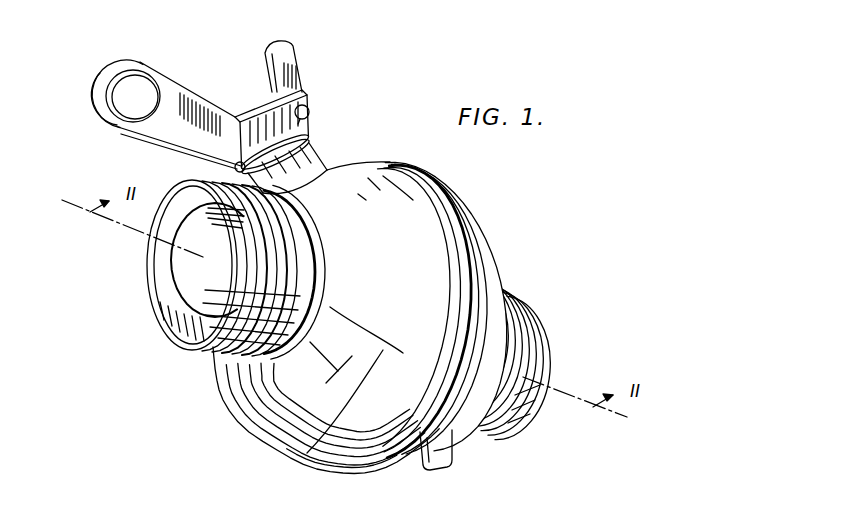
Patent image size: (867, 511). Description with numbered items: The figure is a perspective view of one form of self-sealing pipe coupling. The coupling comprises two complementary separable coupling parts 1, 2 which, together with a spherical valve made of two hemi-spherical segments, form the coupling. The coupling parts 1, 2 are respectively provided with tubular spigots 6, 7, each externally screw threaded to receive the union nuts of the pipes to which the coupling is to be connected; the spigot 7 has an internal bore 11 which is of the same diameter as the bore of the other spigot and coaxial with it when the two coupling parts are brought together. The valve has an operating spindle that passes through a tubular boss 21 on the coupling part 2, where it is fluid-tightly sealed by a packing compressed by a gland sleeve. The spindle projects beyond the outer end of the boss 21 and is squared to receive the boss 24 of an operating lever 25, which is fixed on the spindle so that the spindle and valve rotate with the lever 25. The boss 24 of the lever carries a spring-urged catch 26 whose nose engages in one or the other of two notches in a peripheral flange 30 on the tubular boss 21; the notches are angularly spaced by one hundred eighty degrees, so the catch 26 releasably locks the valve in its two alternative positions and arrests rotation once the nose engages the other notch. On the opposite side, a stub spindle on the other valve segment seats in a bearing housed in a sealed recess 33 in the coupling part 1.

The coupling part 1 is at (494, 278).
The coupling part 2 is at (258, 416).
The tubular spigot 6 is at (537, 344).
The tubular spigot 7 is at (217, 332).
The internal bore 11 is at (170, 300).
The tubular boss 21 is at (322, 165).
The boss 24 is at (307, 117).
The operating lever 25 is at (180, 98).
The spring-urged catch 26 is at (283, 68).
The peripheral flange 30 is at (307, 143).
The sealed recess 33 is at (434, 452).